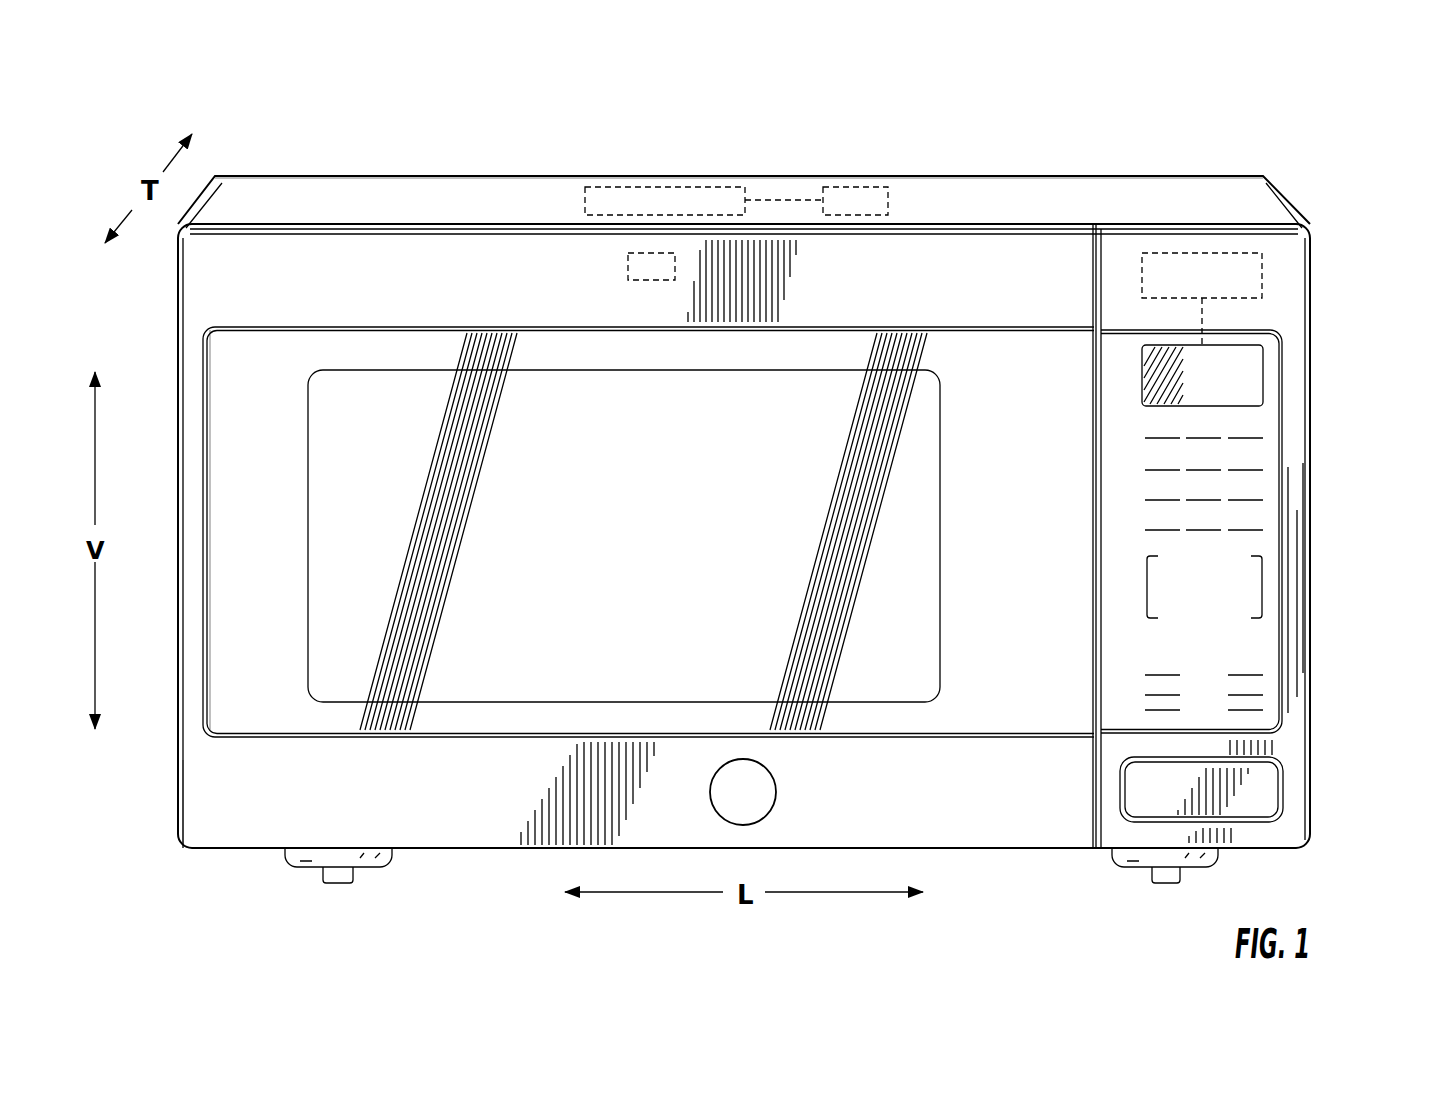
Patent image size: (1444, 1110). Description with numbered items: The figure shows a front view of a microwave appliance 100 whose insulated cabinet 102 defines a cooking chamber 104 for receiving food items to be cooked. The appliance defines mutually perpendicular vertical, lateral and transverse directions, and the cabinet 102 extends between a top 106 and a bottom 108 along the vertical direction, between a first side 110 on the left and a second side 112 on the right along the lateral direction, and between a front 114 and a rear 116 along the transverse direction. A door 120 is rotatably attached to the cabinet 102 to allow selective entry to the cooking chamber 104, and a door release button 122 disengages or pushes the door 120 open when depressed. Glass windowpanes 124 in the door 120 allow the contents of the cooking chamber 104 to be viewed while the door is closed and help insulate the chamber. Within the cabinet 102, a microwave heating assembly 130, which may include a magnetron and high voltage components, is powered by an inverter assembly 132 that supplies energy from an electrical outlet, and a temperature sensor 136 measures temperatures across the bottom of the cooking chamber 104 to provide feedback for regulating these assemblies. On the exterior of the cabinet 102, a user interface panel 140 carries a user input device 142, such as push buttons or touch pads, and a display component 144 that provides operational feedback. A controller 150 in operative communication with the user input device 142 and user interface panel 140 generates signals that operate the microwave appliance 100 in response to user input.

The microwave appliance 100 is at (1353, 123).
The cabinet 102 is at (456, 197).
The cooking chamber 104 is at (345, 325).
The top 106 is at (951, 196).
The bottom 108 is at (400, 867).
The first side 110 is at (177, 778).
The second side 112 is at (1309, 671).
The front 114 is at (1031, 806).
The rear 116 is at (1106, 174).
The door 120 is at (747, 257).
The door release button 122 is at (1267, 808).
The glass windowpanes 124 is at (524, 655).
The microwave heating assembly 130 is at (622, 186).
The inverter assembly 132 is at (847, 185).
The temperature sensor 136 is at (628, 265).
The user interface panel 140 is at (1270, 432).
The user input device 142 is at (1210, 565).
The display component 144 is at (1254, 360).
The controller 150 is at (1205, 253).